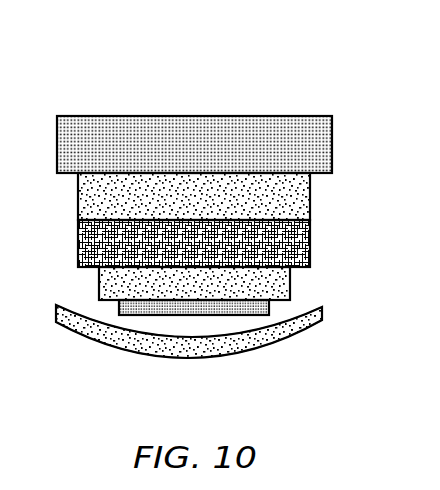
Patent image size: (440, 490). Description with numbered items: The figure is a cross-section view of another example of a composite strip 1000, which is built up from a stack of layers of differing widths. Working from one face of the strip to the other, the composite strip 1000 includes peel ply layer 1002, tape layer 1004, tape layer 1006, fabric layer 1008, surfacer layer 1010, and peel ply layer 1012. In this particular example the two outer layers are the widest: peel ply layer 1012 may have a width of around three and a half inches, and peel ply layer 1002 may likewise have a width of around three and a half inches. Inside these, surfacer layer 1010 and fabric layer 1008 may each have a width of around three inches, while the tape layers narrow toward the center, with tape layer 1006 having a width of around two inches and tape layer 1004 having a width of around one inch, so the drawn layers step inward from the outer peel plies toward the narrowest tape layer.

The composite strip 1000 is at (211, 76).
The peel ply layer 1002 is at (224, 358).
The tape layer 1004 is at (268, 313).
The tape layer 1006 is at (98, 277).
The fabric layer 1008 is at (310, 241).
The surfacer layer 1010 is at (310, 197).
The peel ply layer 1012 is at (332, 142).